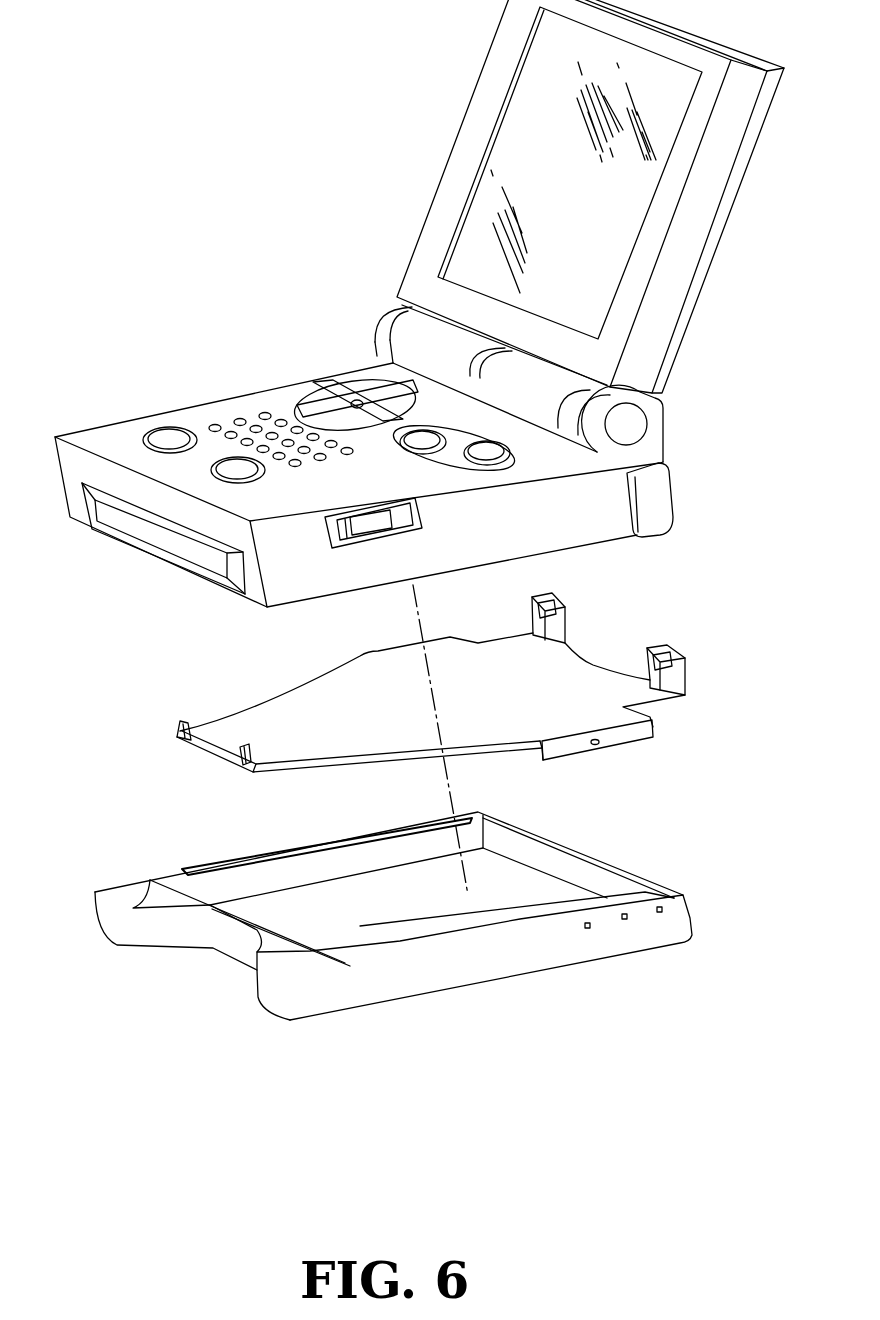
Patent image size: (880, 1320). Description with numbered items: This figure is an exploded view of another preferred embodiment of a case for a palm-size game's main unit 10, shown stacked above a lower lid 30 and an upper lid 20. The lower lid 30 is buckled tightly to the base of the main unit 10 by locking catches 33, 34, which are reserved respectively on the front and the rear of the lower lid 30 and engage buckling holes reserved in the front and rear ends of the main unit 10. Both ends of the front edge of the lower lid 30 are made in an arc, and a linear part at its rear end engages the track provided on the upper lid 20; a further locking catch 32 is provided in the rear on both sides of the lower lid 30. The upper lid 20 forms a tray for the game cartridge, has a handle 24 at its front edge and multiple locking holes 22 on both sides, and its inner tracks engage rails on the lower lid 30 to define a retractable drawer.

The main unit 10 is at (261, 391).
The upper lid 20 is at (453, 991).
The locking holes 22 is at (627, 919).
The handle 24 is at (212, 972).
The lower lid 30 is at (592, 668).
The locking catch 32 is at (598, 745).
The locking catch 33 is at (177, 735).
The locking catch 34 is at (665, 648).